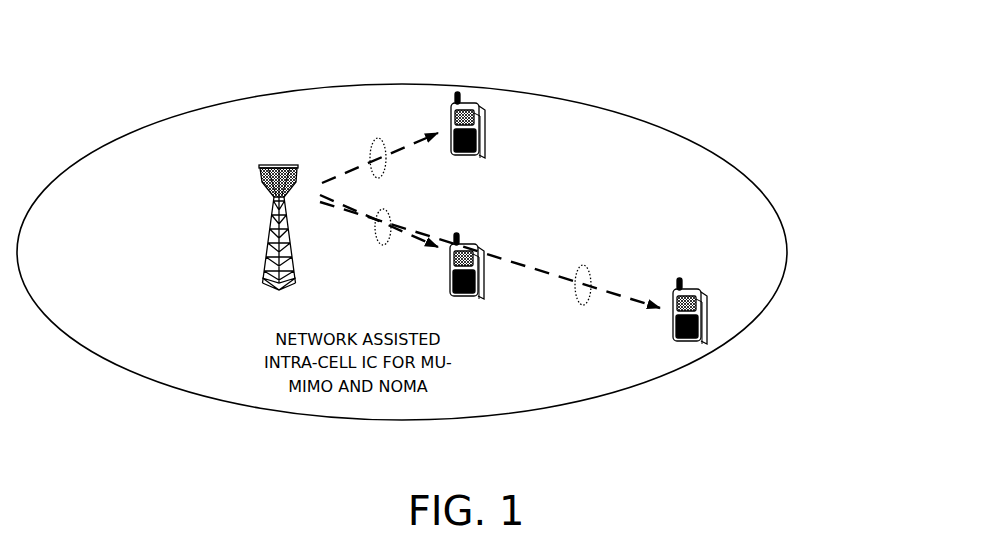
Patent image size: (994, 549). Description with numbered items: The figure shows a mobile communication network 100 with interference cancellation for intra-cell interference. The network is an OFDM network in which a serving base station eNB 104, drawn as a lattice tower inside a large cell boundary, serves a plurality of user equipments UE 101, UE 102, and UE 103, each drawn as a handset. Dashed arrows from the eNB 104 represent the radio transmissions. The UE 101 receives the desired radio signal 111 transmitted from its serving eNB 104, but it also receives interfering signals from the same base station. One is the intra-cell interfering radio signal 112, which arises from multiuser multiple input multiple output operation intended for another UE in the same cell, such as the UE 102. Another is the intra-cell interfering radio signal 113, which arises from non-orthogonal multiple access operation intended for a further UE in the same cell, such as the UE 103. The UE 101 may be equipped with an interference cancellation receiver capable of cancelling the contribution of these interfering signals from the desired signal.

The mobile communication network 100 is at (894, 57).
The serving base station eNB 104 is at (278, 166).
The user equipment UE 101 is at (475, 281).
The user equipment UE 102 is at (503, 125).
The user equipment UE 103 is at (696, 297).
The desired radio signal 111 is at (385, 246).
The intra-cell interfering radio signal 112 is at (380, 139).
The intra-cell interfering radio signal 113 is at (585, 265).